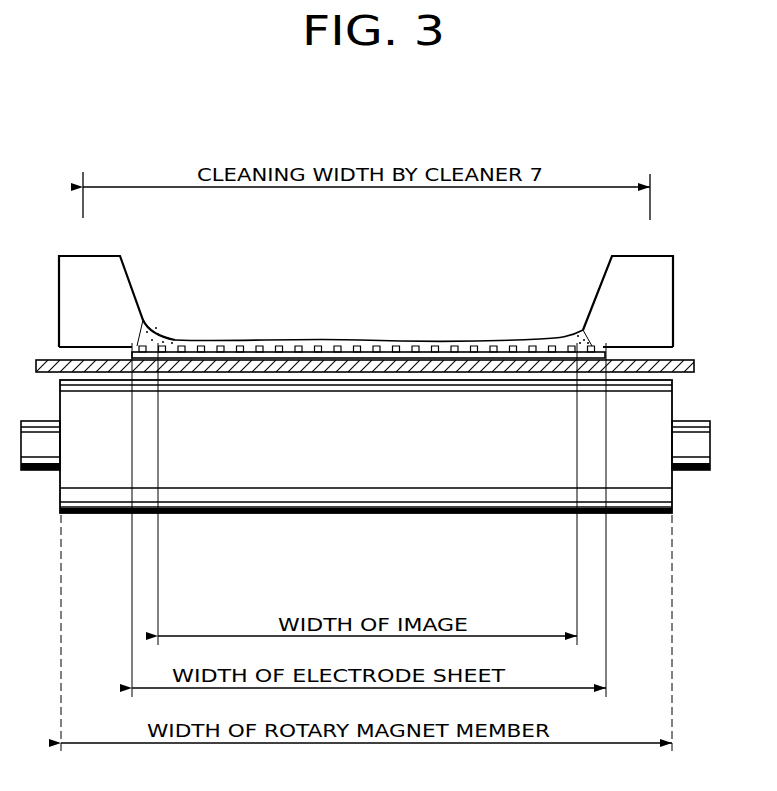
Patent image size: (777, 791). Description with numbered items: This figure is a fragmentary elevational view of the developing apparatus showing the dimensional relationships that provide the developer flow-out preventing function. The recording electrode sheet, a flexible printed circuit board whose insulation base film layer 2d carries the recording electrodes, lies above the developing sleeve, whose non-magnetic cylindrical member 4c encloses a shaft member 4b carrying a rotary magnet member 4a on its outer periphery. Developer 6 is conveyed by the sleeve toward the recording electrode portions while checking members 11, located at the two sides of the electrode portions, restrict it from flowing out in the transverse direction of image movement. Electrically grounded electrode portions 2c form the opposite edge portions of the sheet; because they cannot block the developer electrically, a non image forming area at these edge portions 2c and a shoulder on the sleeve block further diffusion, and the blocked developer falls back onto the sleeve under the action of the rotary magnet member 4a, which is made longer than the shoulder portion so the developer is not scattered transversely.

The checking member 11 is at (65, 305).
The electrode portion 2c is at (141, 318).
The insulation base film layer 2d is at (200, 345).
The developer 6 is at (578, 332).
The cylindrical member 4c is at (687, 359).
The magnet member 4a is at (668, 497).
The shaft member 4b is at (695, 419).